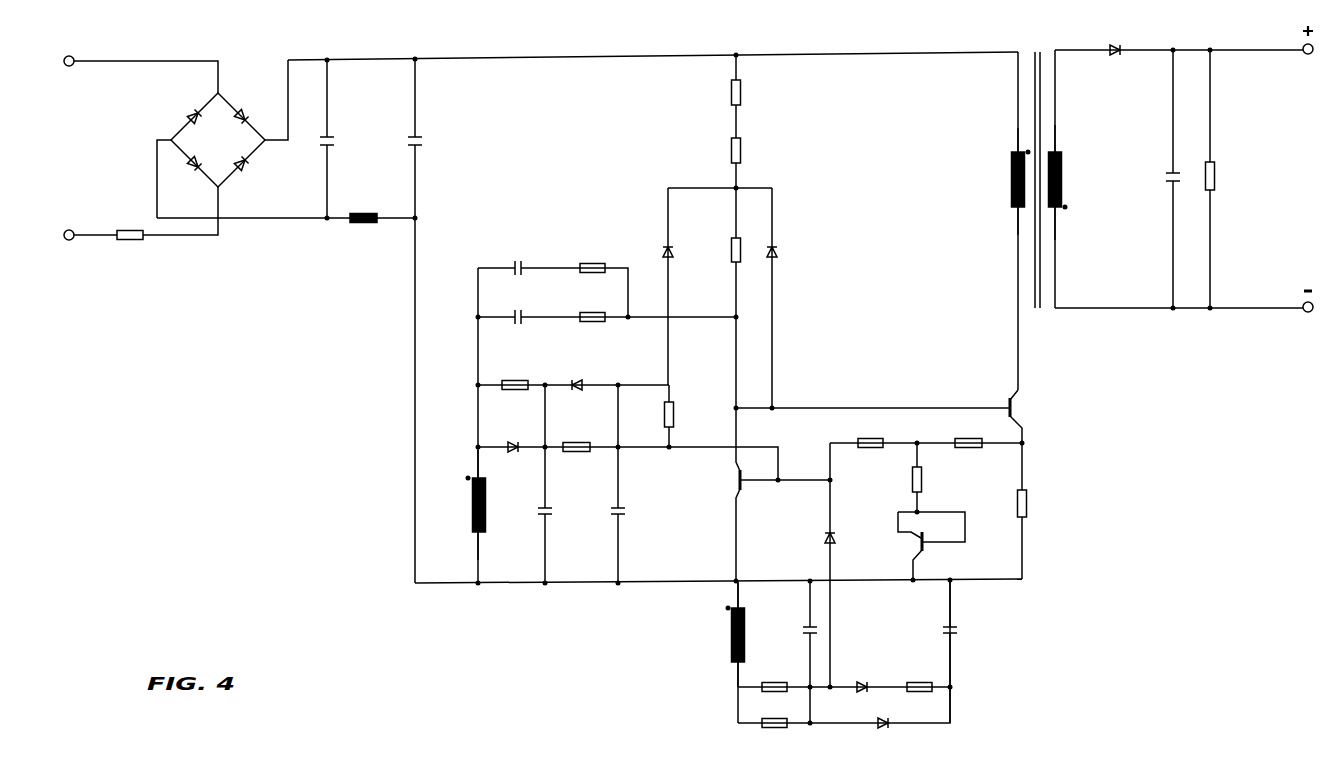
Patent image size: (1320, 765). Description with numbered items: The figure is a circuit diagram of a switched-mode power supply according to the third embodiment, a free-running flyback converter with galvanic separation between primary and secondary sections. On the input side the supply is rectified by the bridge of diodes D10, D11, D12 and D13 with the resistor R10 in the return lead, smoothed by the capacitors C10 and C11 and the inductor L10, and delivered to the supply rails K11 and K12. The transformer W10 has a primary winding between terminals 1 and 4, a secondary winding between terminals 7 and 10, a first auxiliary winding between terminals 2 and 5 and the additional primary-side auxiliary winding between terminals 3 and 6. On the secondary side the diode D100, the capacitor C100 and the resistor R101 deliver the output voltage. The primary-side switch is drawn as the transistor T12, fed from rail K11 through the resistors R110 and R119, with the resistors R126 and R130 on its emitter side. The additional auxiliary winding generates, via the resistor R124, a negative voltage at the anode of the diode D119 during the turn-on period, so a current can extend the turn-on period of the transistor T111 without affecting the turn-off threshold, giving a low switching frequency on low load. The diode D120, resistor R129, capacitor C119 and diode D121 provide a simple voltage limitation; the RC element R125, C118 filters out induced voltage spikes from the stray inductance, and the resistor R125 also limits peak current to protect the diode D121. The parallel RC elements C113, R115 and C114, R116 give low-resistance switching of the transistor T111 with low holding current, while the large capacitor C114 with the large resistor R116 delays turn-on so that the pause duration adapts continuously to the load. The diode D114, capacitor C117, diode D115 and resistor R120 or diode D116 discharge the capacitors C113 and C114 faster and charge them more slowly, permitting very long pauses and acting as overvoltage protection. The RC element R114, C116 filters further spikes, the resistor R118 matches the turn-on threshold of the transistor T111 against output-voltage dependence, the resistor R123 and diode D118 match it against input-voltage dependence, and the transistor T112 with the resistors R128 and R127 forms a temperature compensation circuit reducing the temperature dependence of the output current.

The rectifier diode D10 is at (247, 94).
The rectifier diode D11 is at (187, 99).
The rectifier diode D12 is at (208, 162).
The rectifier diode D13 is at (249, 187).
The input resistor R10 is at (119, 222).
The filter capacitor C10 is at (317, 139).
The filter capacitor C11 is at (404, 138).
The filter inductor L10 is at (369, 208).
The positive supply node K11 is at (653, 46).
The negative supply node K12 is at (312, 225).
The transformer with primary-side auxiliary winding W10 is at (769, 356).
The primary winding terminal 1 is at (1005, 221).
The primary winding terminal 4 is at (1006, 140).
The secondary winding terminal 7 is at (1064, 224).
The secondary winding terminal 10 is at (1069, 138).
The auxiliary winding terminal 2 is at (485, 464).
The auxiliary winding terminal 5 is at (485, 545).
The auxiliary winding terminal 3 is at (728, 674).
The auxiliary winding terminal 6 is at (726, 595).
The starting resistor R110 is at (753, 96).
The starting resistor R119 is at (726, 150).
The diode D115 is at (657, 286).
The resistor R120 is at (726, 298).
The diode D116 is at (761, 298).
The capacitor C113 is at (533, 259).
The resistor R115 is at (606, 258).
The capacitor C114 is at (533, 306).
The resistor R116 is at (596, 303).
The resistor R114 is at (527, 375).
The diode D114 is at (592, 374).
The resistor R118 is at (653, 416).
The diode D118 is at (512, 436).
The resistor R123 is at (588, 437).
The capacitor C116 is at (534, 484).
The capacitor C117 is at (608, 484).
The transistor T111 is at (758, 495).
The diode D119 is at (818, 523).
The resistor R126 is at (882, 433).
The resistor R127 is at (981, 433).
The resistor R128 is at (906, 479).
The resistor R130 is at (1012, 511).
The transistor T112 is at (941, 545).
The switching transistor T12 is at (1044, 416).
The output rectifier diode D100 is at (1127, 39).
The output capacitor C100 is at (1163, 179).
The load resistor R101 is at (1199, 179).
The capacitor C118 is at (799, 651).
The capacitor C119 is at (939, 651).
The resistor R124 is at (776, 673).
The resistor R125 is at (778, 741).
The diode D120 is at (877, 676).
The diode D121 is at (901, 741).
The resistor R129 is at (911, 699).